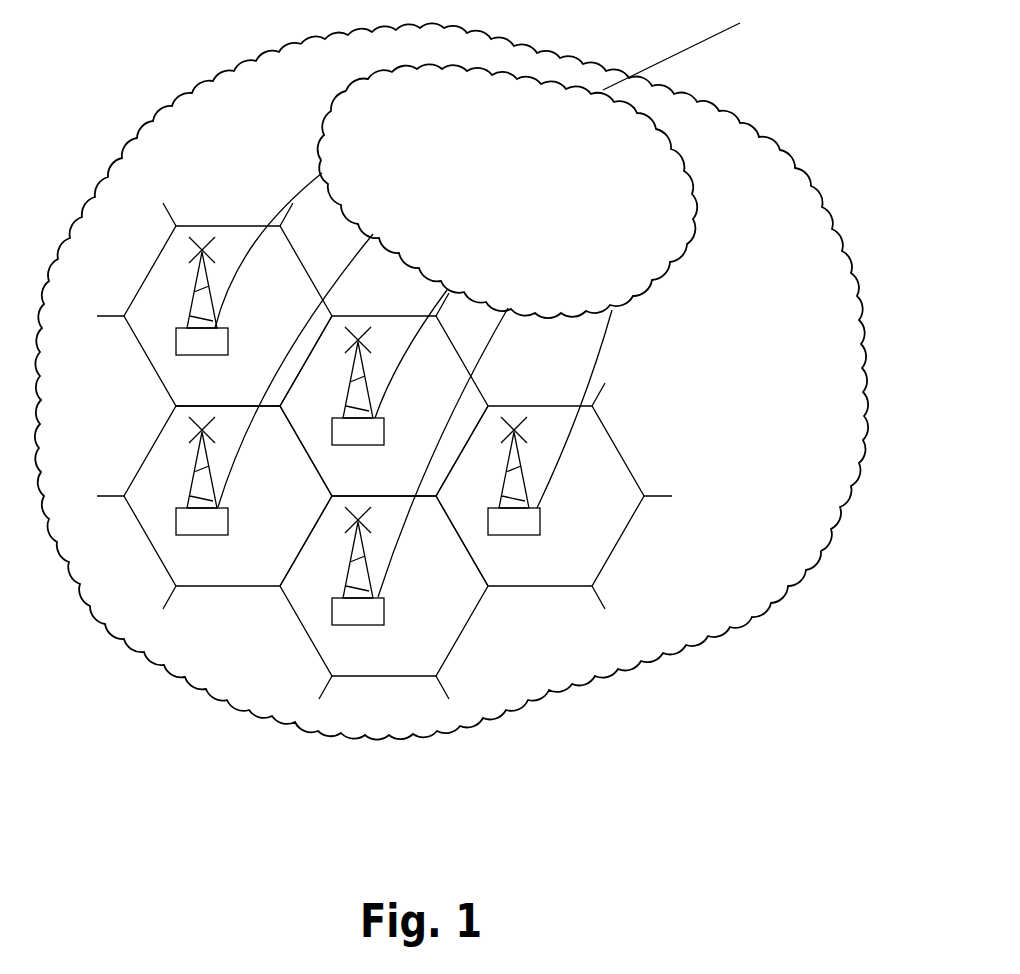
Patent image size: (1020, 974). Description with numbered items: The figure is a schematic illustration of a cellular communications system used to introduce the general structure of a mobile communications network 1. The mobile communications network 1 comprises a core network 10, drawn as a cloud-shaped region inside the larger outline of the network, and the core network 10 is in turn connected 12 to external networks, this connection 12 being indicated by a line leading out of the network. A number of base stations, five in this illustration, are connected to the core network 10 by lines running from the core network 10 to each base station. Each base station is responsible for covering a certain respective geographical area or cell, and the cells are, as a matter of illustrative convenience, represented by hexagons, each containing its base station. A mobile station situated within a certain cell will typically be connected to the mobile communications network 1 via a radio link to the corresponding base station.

The mobile communications network 1 is at (503, 700).
The core network 10 is at (680, 243).
The connection to external networks 12 is at (722, 35).